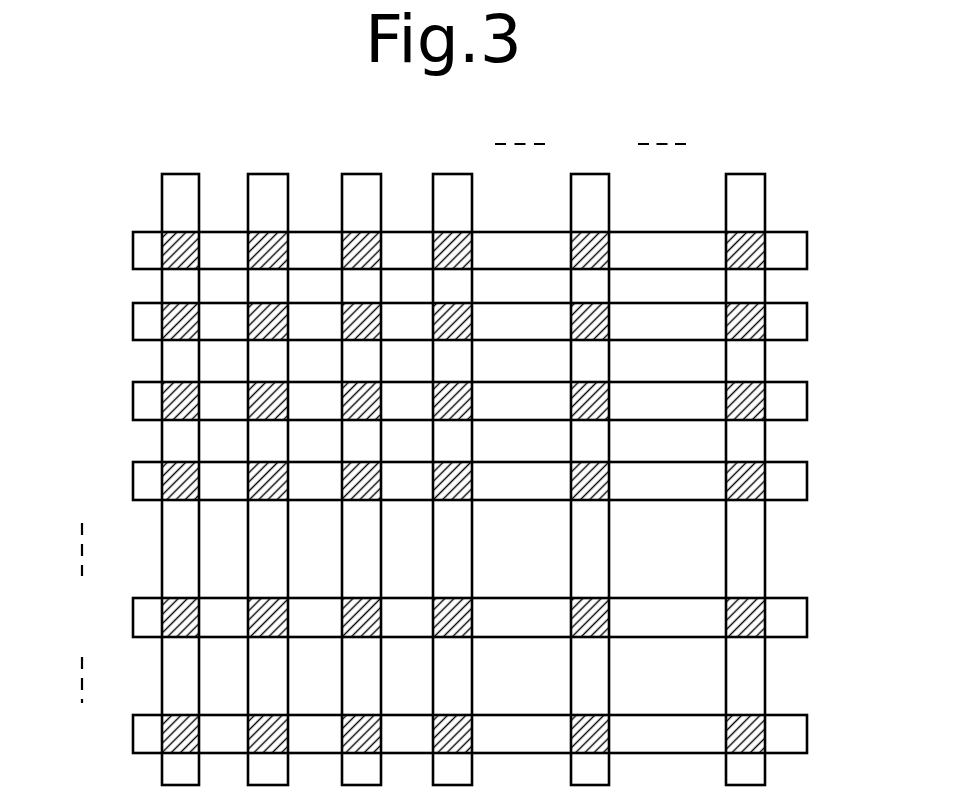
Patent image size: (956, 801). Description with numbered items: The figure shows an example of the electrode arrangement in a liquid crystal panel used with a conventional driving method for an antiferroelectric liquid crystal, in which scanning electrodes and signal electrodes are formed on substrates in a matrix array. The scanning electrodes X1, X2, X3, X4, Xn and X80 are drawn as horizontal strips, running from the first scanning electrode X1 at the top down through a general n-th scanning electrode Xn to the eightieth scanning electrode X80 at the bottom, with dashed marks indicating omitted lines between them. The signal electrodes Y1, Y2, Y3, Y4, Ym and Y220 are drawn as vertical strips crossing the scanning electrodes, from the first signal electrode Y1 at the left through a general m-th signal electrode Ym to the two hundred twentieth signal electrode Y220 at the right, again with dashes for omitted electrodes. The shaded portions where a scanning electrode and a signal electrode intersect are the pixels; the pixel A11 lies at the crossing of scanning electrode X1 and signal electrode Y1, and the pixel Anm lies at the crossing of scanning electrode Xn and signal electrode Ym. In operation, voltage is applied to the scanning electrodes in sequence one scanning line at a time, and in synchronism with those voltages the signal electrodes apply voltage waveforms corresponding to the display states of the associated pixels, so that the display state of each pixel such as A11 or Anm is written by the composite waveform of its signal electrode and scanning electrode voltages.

The pixel A11 is at (165, 245).
The pixel Anm is at (585, 597).
The scanning electrode X1 is at (434, 251).
The scanning electrode X2 is at (433, 322).
The scanning electrode X3 is at (433, 401).
The scanning electrode X4 is at (433, 481).
The scanning electrode Xn is at (433, 617).
The scanning electrode X80 is at (432, 734).
The signal electrode Y1 is at (176, 456).
The signal electrode Y2 is at (265, 456).
The signal electrode Y3 is at (358, 456).
The signal electrode Y4 is at (450, 456).
The signal electrode Ym is at (585, 456).
The signal electrode Y220 is at (745, 456).